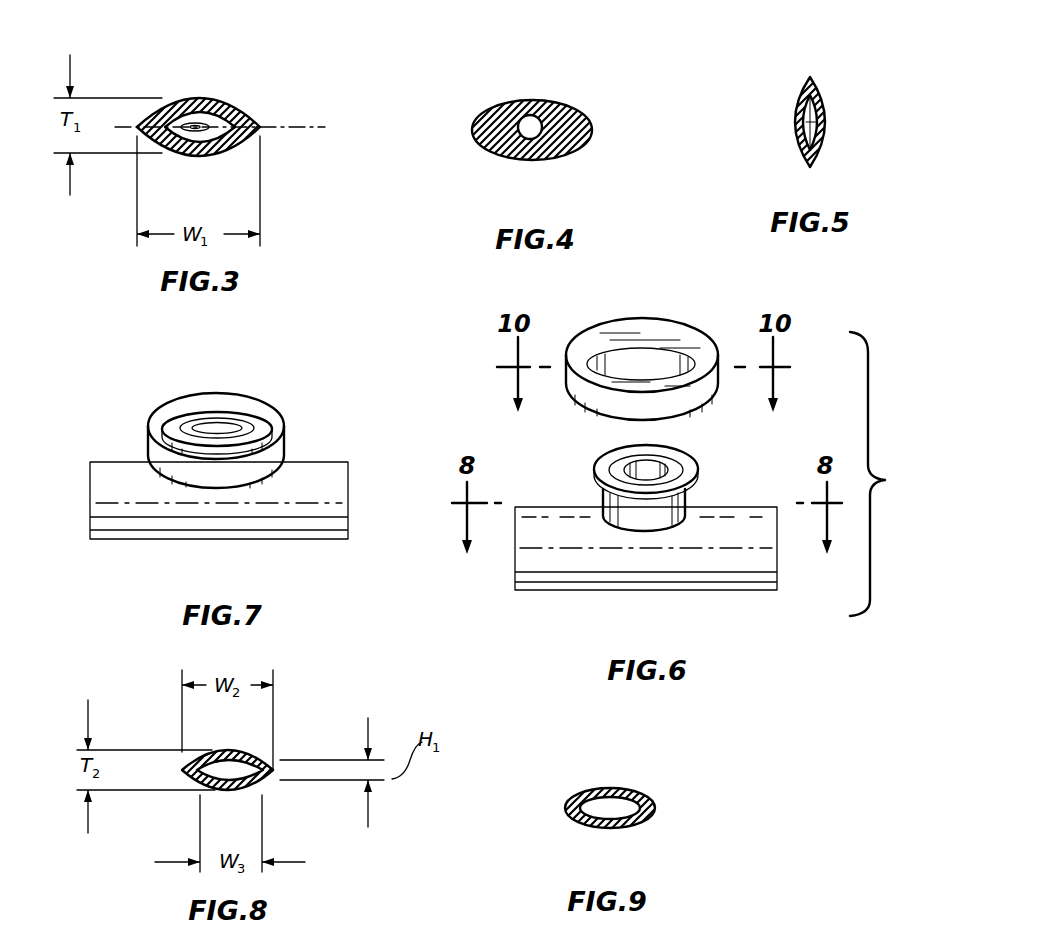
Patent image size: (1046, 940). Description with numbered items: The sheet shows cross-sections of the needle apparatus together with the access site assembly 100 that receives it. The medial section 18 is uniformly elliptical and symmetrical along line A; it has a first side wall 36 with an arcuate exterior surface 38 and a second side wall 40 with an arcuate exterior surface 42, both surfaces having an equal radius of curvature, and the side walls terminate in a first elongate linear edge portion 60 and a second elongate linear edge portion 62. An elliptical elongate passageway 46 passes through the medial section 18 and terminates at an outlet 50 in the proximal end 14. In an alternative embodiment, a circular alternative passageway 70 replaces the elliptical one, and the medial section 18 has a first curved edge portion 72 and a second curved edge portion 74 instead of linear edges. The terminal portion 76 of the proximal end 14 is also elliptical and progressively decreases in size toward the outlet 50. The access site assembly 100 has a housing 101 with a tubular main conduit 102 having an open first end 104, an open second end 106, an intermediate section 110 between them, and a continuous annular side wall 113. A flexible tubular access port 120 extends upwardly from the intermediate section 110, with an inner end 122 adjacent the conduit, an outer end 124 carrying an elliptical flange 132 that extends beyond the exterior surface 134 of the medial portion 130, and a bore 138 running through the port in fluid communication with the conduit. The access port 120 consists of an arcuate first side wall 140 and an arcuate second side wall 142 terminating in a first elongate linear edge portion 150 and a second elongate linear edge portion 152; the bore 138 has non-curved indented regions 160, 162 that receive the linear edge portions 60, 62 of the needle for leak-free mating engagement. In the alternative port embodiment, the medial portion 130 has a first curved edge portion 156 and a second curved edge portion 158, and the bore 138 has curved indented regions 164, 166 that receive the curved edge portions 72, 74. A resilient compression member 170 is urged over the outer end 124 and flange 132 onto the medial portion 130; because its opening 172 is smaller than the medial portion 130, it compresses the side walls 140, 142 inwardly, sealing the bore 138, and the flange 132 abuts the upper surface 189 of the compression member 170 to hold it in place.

In FIG. 5, the proximal end 14 is at (800, 116).
In FIG. 3, the medial section 18 is at (246, 119).
In FIG. 4, the medial section 18 is at (580, 106).
In FIG. 3, the first side wall 36 is at (187, 99).
In FIG. 4, the first side wall 36 is at (553, 106).
In FIG. 3, the arcuate exterior surface 38 is at (238, 104).
In FIG. 4, the arcuate exterior surface 38 is at (521, 100).
In FIG. 3, the second side wall 40 is at (222, 146).
In FIG. 4, the second side wall 40 is at (505, 157).
In FIG. 3, the arcuate exterior surface 42 is at (199, 149).
In FIG. 4, the arcuate exterior surface 42 is at (531, 160).
In FIG. 3, the elongate passageway 46 is at (171, 140).
In FIG. 5, the elongate passageway 46 is at (818, 118).
In FIG. 3, the outlet 50 is at (213, 99).
In FIG. 3, the first elongate linear edge portion 60 is at (137, 127).
In FIG. 5, the first elongate linear edge portion 60 is at (806, 82).
In FIG. 3, the second elongate linear edge portion 62 is at (262, 130).
In FIG. 5, the second elongate linear edge portion 62 is at (815, 165).
In FIG. 4, the alternative passageway 70 is at (545, 142).
In FIG. 4, the first curved edge portion 72 is at (471, 125).
In FIG. 4, the second curved edge portion 74 is at (593, 128).
In FIG. 5, the terminal portion 76 is at (815, 100).
In FIG. 3, the line of symmetry A is at (309, 126).
In FIG. 7, the access site assembly 100 is at (356, 442).
In FIG. 6, the access site assembly 100 is at (773, 608).
In FIG. 7, the housing 101 is at (98, 462).
In FIG. 6, the housing 101 is at (720, 511).
In FIG. 7, the main conduit 102 is at (120, 545).
In FIG. 6, the main conduit 102 is at (618, 590).
In FIG. 7, the first end 104 is at (90, 480).
In FIG. 6, the first end 104 is at (515, 562).
In FIG. 7, the second end 106 is at (350, 490).
In FIG. 6, the second end 106 is at (780, 560).
In FIG. 7, the intermediate section 110 is at (310, 533).
In FIG. 6, the intermediate section 110 is at (572, 591).
In FIG. 7, the annular side wall 113 is at (195, 540).
In FIG. 6, the annular side wall 113 is at (704, 578).
In FIG. 7, the tubular access port 120 is at (165, 427).
In FIG. 6, the tubular access port 120 is at (626, 522).
In FIG. 8, the tubular access port 120 is at (200, 786).
In FIG. 9, the tubular access port 120 is at (584, 826).
In FIG. 6, the inner end 122 is at (675, 567).
In FIG. 6, the outer end 124 is at (690, 495).
In FIG. 6, the medial portion 130 is at (692, 516).
In FIG. 8, the medial portion 130 is at (202, 752).
In FIG. 9, the medial portion 130 is at (641, 821).
In FIG. 7, the flange 132 is at (270, 430).
In FIG. 6, the flange 132 is at (673, 455).
In FIG. 6, the exterior surface 134 is at (652, 522).
In FIG. 7, the bore 138 is at (235, 426).
In FIG. 6, the bore 138 is at (640, 470).
In FIG. 8, the bore 138 is at (255, 755).
In FIG. 9, the bore 138 is at (622, 800).
In FIG. 8, the first side wall 140 is at (232, 752).
In FIG. 9, the first side wall 140 is at (612, 795).
In FIG. 6, the second side wall 142 is at (601, 500).
In FIG. 8, the second side wall 142 is at (238, 791).
In FIG. 9, the second side wall 142 is at (616, 827).
In FIG. 8, the first elongate linear edge portion 150 is at (185, 773).
In FIG. 8, the second elongate linear edge portion 152 is at (280, 763).
In FIG. 9, the first curved edge portion 156 is at (566, 806).
In FIG. 9, the second curved edge portion 158 is at (655, 808).
In FIG. 8, the non-curved indented region 160 is at (215, 762).
In FIG. 8, the non-curved indented region 162 is at (262, 784).
In FIG. 9, the curved indented region 164 is at (591, 798).
In FIG. 9, the curved indented region 166 is at (645, 801).
In FIG. 7, the compression member 170 is at (186, 398).
In FIG. 6, the compression member 170 is at (648, 318).
In FIG. 7, the opening 172 is at (206, 466).
In FIG. 6, the opening 172 is at (655, 360).
In FIG. 7, the upper surface 189 is at (228, 398).